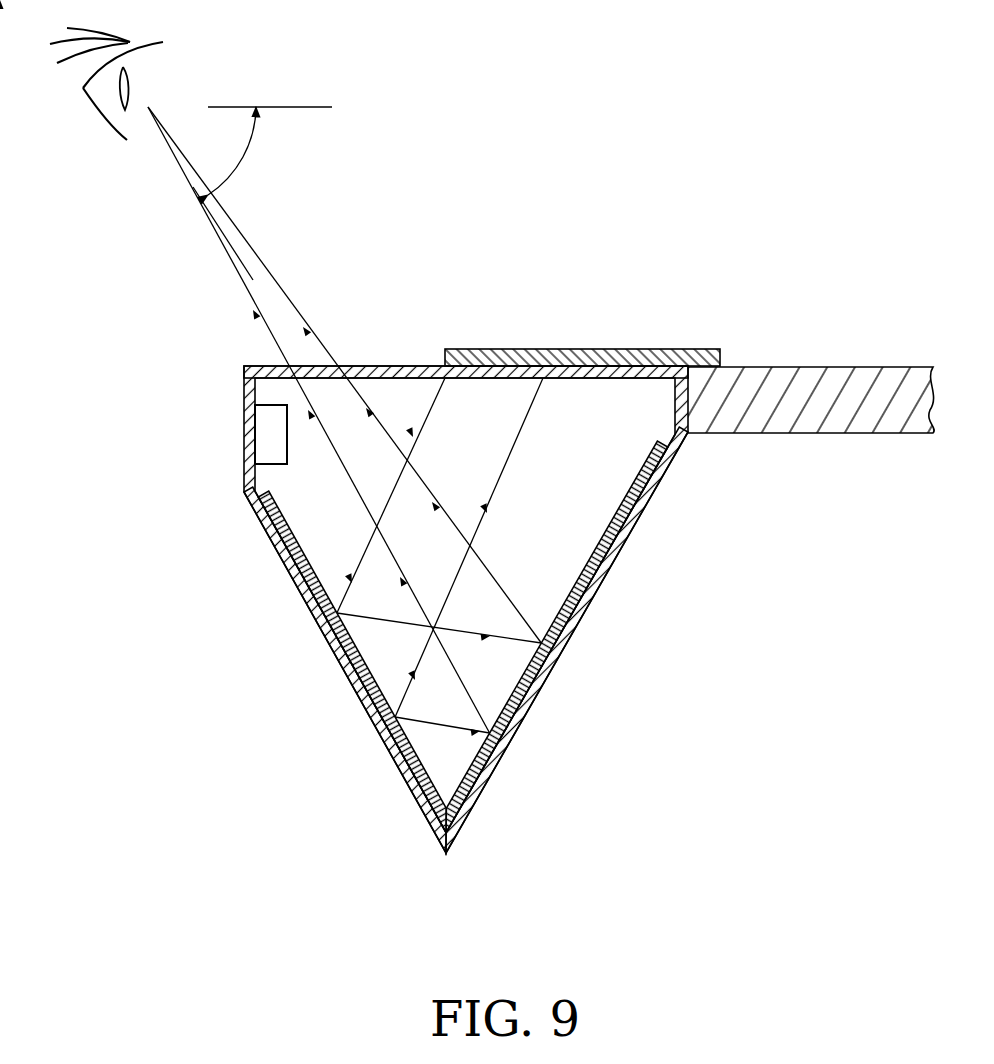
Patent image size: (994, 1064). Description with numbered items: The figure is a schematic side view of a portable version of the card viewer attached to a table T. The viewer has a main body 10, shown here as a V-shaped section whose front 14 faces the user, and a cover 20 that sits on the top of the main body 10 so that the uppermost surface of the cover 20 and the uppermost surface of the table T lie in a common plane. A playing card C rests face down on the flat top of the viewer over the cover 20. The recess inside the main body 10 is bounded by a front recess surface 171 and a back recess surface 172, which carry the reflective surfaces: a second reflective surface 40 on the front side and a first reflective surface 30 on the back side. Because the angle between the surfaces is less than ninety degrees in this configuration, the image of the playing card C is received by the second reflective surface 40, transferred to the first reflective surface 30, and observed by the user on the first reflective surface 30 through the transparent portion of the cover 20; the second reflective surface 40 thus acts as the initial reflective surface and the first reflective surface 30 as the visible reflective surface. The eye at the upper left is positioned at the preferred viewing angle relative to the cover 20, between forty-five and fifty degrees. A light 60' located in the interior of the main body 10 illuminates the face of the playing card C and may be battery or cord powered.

The main body 10 is at (266, 688).
The front 14 is at (243, 479).
The cover 20 is at (255, 365).
The light 60' is at (206, 429).
The second reflective surface 40 is at (395, 742).
The first reflective surface 30 is at (490, 767).
The front recess surface 171 is at (320, 613).
The back recess surface 172 is at (567, 648).
The playing card C is at (610, 348).
The table T is at (820, 367).